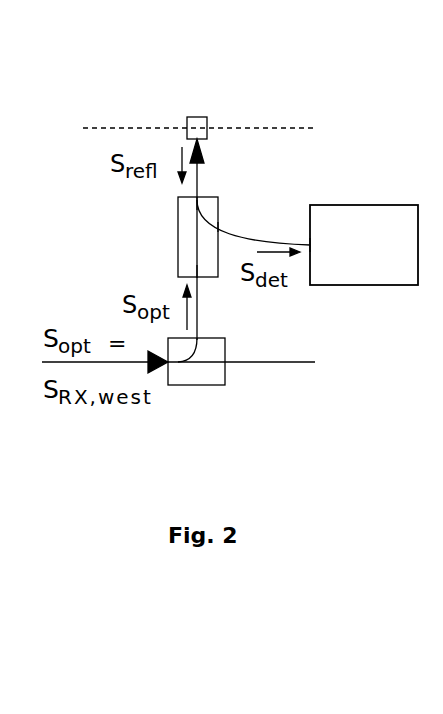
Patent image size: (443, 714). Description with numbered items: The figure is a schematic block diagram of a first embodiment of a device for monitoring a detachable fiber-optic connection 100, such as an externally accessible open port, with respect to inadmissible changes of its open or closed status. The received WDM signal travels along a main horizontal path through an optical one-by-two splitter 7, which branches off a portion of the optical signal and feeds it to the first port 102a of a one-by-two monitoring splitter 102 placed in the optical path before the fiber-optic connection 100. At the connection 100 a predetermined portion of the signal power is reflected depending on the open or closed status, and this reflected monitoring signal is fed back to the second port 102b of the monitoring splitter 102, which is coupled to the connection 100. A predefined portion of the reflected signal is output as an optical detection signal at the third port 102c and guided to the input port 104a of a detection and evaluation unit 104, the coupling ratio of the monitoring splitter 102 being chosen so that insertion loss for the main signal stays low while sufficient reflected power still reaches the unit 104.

The fiber-optic connection 100 is at (198, 125).
The monitoring splitter 102 is at (190, 240).
The first port 102a is at (200, 279).
The second port 102b is at (198, 197).
The third port 102c is at (218, 227).
The detection and evaluation unit 104 is at (365, 265).
The input port 104a is at (309, 244).
The optical 1×2 splitter 7 is at (207, 373).